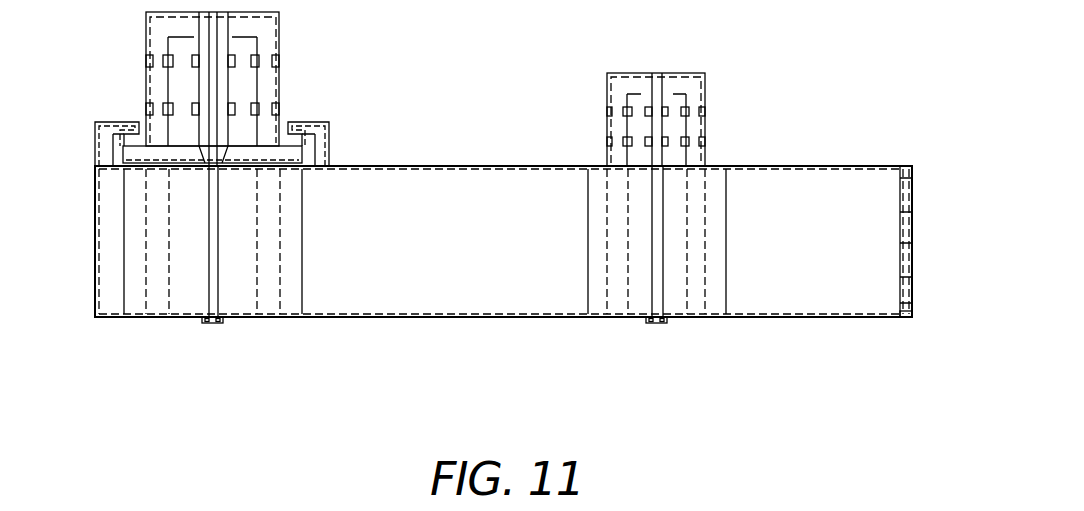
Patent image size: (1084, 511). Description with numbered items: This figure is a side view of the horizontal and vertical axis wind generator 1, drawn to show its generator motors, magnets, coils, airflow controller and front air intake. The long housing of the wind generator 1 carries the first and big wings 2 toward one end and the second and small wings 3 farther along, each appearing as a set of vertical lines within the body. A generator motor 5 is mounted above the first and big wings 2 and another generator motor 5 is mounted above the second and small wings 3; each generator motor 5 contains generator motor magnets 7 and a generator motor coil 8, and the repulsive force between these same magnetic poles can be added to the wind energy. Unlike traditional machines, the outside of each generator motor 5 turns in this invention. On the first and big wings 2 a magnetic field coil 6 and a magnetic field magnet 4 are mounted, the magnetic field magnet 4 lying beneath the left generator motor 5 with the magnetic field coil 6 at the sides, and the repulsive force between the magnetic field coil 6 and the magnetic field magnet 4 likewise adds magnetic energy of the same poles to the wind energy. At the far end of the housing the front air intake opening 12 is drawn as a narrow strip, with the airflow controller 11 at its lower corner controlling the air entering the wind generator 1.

The horizontal and vertical axis wind generator 1 is at (429, 253).
The first and big wings 2 is at (181, 302).
The second and small wings 3 is at (687, 262).
The magnetic field magnet 4 is at (125, 152).
The generator motor 5 is at (280, 30).
The magnetic field coil 6 is at (330, 128).
The generator motor magnets 7 is at (147, 61).
The generator motor coil 8 is at (169, 55).
The airflow controller 11 is at (912, 312).
The front air intake opening 12 is at (914, 195).